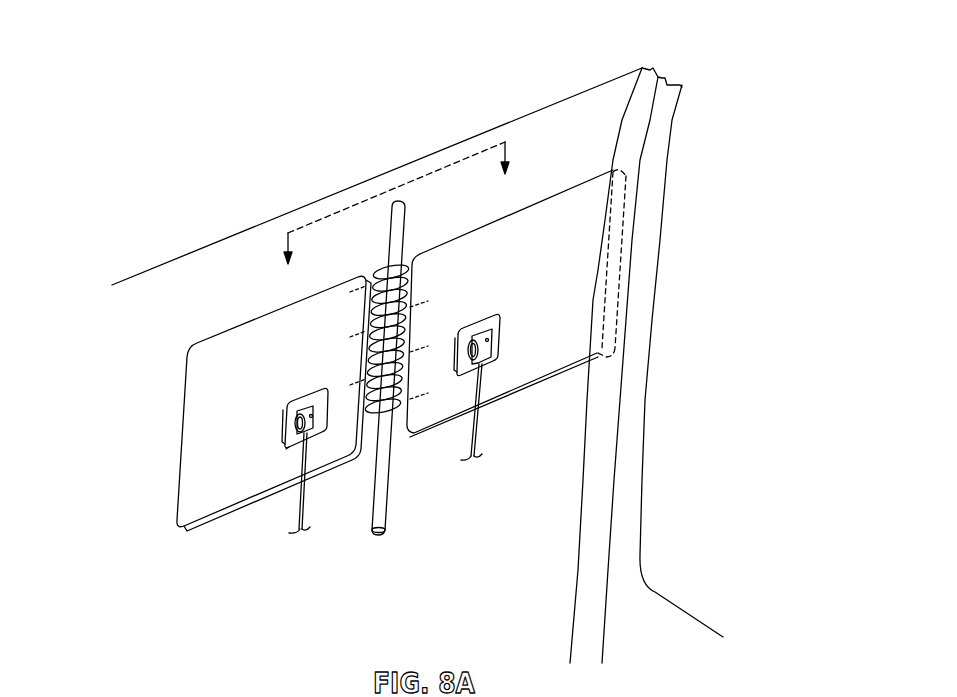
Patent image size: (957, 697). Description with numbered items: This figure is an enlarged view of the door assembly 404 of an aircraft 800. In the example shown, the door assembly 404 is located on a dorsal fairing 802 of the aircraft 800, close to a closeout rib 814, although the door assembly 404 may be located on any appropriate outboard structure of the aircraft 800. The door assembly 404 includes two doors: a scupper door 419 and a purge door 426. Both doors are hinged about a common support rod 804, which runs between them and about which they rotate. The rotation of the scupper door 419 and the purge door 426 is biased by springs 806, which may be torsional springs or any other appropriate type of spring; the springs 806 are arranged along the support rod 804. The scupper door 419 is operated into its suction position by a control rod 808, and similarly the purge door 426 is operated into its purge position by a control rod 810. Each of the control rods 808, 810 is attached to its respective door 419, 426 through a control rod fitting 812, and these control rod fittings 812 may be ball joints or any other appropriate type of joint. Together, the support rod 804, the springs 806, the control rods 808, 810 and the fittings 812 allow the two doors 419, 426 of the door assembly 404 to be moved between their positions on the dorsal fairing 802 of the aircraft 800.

The aircraft 800 is at (729, 42).
The door assembly 404 is at (564, 168).
The dorsal fairing 802 is at (365, 185).
The springs 806 is at (380, 278).
The scupper door 419 is at (593, 250).
The control rod fittings 812 is at (285, 435).
The closeout rib 814 is at (637, 343).
The purge door 426 is at (218, 358).
The control rod 808 is at (477, 428).
The control rod 810 is at (293, 515).
The support rod 804 is at (375, 535).